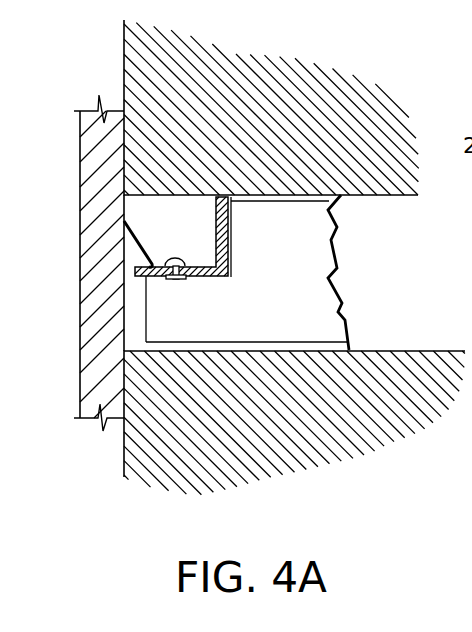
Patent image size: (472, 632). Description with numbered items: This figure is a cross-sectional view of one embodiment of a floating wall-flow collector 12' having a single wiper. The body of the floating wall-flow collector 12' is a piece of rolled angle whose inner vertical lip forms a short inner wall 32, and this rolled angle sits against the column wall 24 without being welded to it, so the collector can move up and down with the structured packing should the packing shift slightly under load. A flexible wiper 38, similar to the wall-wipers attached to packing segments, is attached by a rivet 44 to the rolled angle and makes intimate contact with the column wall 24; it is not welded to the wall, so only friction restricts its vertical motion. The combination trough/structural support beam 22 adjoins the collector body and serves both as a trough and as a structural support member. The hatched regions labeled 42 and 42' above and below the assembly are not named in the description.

The upper wall structure 42 is at (230, 107).
The lower wall structure 42' is at (254, 423).
The column wall 24 is at (80, 196).
The combination trough/structural support beam 22 is at (311, 327).
The short inner wall 32 is at (231, 238).
The flexible wiper 38 is at (139, 245).
The rivet 44 is at (178, 281).
The floating wall-flow collector 12' is at (279, 294).